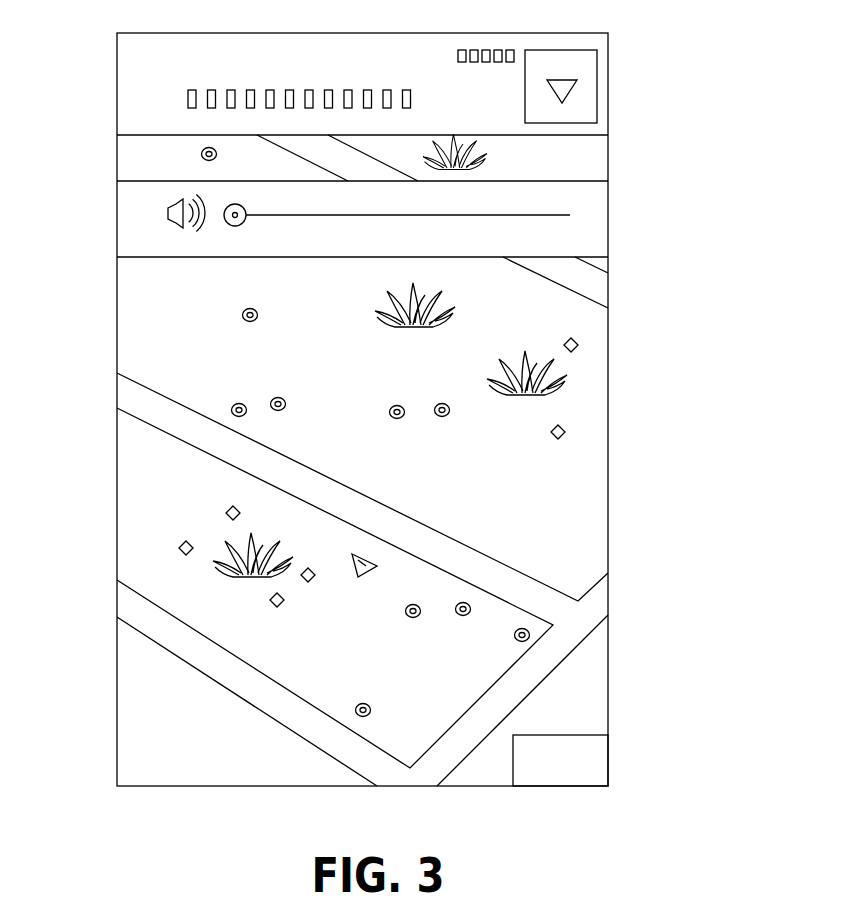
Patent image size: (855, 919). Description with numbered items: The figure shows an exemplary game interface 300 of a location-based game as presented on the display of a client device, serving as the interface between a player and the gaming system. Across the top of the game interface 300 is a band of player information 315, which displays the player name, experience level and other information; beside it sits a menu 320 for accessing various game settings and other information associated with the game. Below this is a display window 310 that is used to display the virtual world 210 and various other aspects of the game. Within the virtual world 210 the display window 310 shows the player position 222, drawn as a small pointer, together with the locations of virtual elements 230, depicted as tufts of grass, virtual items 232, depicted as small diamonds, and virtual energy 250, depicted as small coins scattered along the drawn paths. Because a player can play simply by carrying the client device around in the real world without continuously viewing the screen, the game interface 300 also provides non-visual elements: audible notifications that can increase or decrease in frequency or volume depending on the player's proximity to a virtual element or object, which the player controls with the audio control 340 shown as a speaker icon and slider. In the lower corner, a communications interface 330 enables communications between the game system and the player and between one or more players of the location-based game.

The game interface 300 is at (698, 122).
The player information 315 is at (127, 54).
The menu 320 is at (590, 87).
The display window 310 is at (601, 162).
The audio control 340 is at (127, 200).
The virtual world 210 is at (600, 494).
The virtual elements 230 is at (385, 300).
The virtual energy 250 is at (258, 318).
The virtual items 232 is at (228, 511).
The player position 222 is at (358, 566).
The communications interface 330 is at (600, 766).